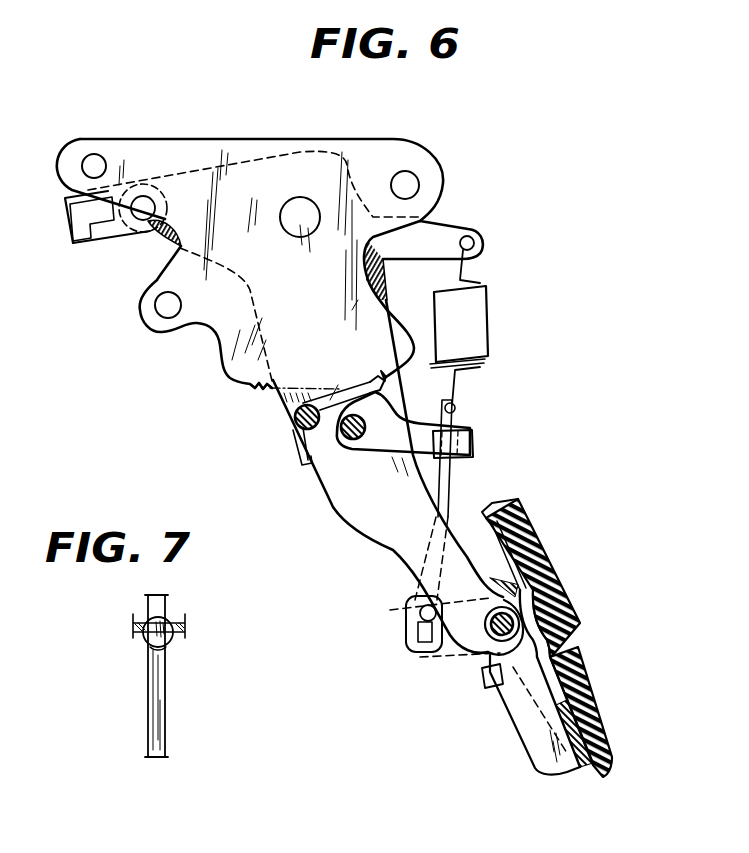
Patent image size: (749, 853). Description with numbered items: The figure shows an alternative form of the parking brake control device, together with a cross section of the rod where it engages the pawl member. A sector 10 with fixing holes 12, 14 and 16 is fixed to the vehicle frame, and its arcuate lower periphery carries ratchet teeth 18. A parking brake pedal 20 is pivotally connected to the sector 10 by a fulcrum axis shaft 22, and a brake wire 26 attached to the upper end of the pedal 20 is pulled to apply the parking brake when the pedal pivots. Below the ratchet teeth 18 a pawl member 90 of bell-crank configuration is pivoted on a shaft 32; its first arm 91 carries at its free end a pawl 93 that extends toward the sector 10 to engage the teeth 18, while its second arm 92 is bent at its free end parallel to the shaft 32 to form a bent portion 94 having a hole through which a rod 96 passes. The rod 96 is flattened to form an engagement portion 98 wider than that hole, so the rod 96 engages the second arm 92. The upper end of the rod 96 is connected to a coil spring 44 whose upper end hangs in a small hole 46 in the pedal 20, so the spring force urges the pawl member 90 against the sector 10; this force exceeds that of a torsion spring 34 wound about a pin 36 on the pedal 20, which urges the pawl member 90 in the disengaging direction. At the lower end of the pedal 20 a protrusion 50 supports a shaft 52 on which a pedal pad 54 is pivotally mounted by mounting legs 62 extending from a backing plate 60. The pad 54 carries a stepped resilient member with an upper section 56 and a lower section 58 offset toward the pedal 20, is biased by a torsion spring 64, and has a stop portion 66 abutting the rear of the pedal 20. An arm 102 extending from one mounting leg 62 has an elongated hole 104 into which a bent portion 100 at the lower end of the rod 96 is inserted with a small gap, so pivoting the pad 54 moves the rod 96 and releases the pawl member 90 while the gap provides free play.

In FIG. 6, the sector 10 is at (212, 152).
In FIG. 6, the fixing hole 12 is at (86, 163).
In FIG. 6, the fixing hole 14 is at (405, 172).
In FIG. 6, the fixing hole 16 is at (160, 308).
In FIG. 6, the ratchet teeth 18 is at (262, 389).
In FIG. 6, the parking brake pedal 20 is at (373, 523).
In FIG. 6, the fulcrum axis shaft 22 is at (300, 224).
In FIG. 6, the brake wire 26 is at (88, 235).
In FIG. 6, the shaft 32 is at (368, 421).
In FIG. 6, the torsion spring 34 is at (295, 445).
In FIG. 6, the pin 36 is at (293, 419).
In FIG. 6, the coil spring 44 is at (490, 315).
In FIG. 6, the small hole 46 is at (476, 243).
In FIG. 6, the protrusion 50 is at (530, 623).
In FIG. 6, the shaft 52 is at (498, 636).
In FIG. 6, the pedal pad 54 is at (562, 650).
In FIG. 6, the upper section 56 is at (520, 523).
In FIG. 6, the lower section 58 is at (590, 738).
In FIG. 6, the backing plate 60 is at (550, 704).
In FIG. 6, the mounting legs 62 is at (537, 580).
In FIG. 6, the torsion spring 64 is at (500, 680).
In FIG. 6, the stop portion 66 is at (585, 772).
In FIG. 6, the pawl member 90 is at (358, 452).
In FIG. 6, the first arm 91 is at (357, 407).
In FIG. 6, the second arm 92 is at (397, 452).
In FIG. 6, the pawl 93 is at (380, 374).
In FIG. 6, the bent portion 94 is at (467, 430).
In FIG. 7, the bent portion 94 is at (177, 619).
In FIG. 6, the rod 96 is at (450, 471).
In FIG. 7, the rod 96 is at (160, 668).
In FIG. 6, the engagement portion 98 is at (474, 442).
In FIG. 7, the engagement portion 98 is at (147, 638).
In FIG. 6, the bent portion 100 is at (420, 612).
In FIG. 6, the arm 102 is at (436, 653).
In FIG. 6, the elongated hole 104 is at (420, 638).